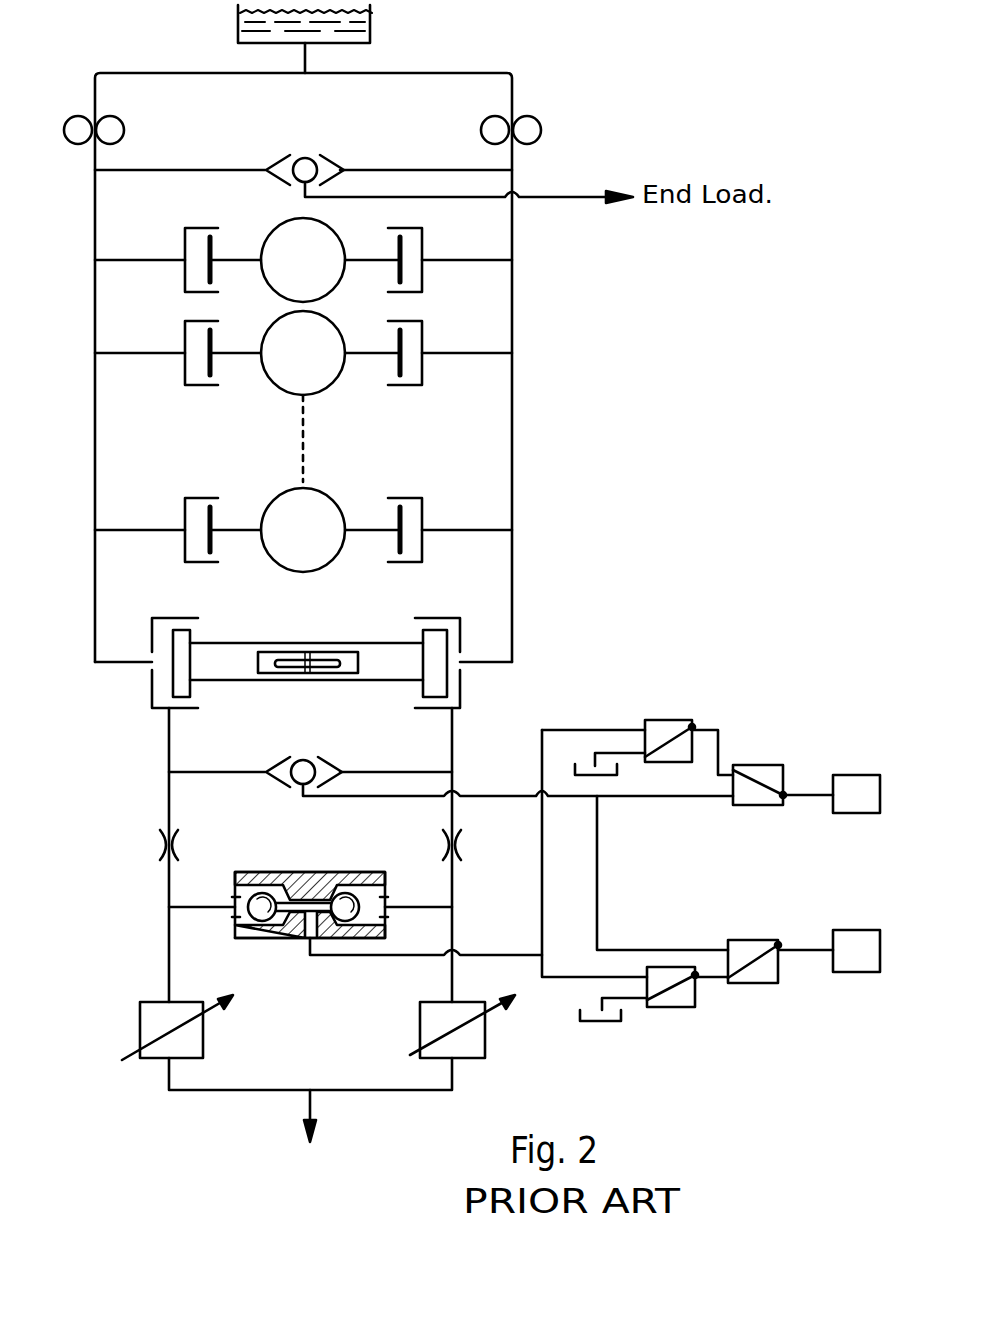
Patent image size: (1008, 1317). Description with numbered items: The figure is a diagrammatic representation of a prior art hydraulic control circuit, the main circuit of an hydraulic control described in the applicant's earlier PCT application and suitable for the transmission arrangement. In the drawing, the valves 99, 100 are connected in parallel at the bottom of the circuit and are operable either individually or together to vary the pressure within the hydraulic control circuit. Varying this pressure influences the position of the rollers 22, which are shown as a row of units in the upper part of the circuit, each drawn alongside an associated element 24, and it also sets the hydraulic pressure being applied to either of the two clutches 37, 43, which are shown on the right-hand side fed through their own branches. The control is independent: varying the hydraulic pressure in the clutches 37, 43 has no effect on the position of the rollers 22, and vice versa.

The rollers 22 is at (336, 289).
The clutch 24 is at (185, 243).
The clutch 37 is at (851, 775).
The clutch 43 is at (857, 930).
The valve 99 is at (140, 1015).
The valve 100 is at (420, 1015).